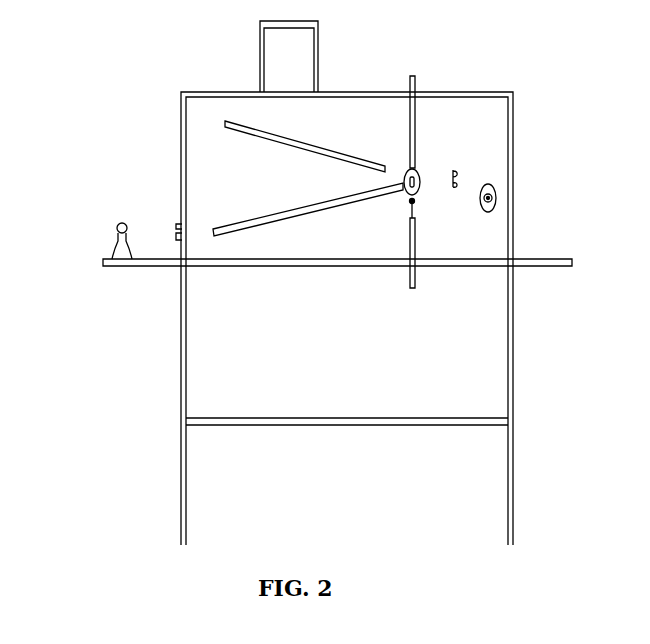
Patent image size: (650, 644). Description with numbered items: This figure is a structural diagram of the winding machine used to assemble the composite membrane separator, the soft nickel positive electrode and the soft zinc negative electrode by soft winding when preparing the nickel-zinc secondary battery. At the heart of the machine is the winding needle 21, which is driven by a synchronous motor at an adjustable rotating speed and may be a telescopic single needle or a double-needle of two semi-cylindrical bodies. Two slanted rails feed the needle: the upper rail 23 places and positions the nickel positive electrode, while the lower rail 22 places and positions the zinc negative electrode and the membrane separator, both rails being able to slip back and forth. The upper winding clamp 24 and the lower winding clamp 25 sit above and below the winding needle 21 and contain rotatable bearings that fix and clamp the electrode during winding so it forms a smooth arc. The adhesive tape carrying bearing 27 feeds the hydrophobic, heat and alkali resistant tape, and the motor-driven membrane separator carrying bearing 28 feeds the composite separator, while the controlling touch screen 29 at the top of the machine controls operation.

The winding needle 21 is at (420, 177).
The lower rail 22 is at (213, 228).
The upper rail 23 is at (225, 120).
The upper winding clamp 24 is at (414, 147).
The lower winding clamp 25 is at (413, 220).
The adhesive tape carrying bearing 27 is at (497, 198).
The motor-driven membrane separator carrying bearing 28 is at (110, 262).
The controlling touch screen 29 is at (318, 28).